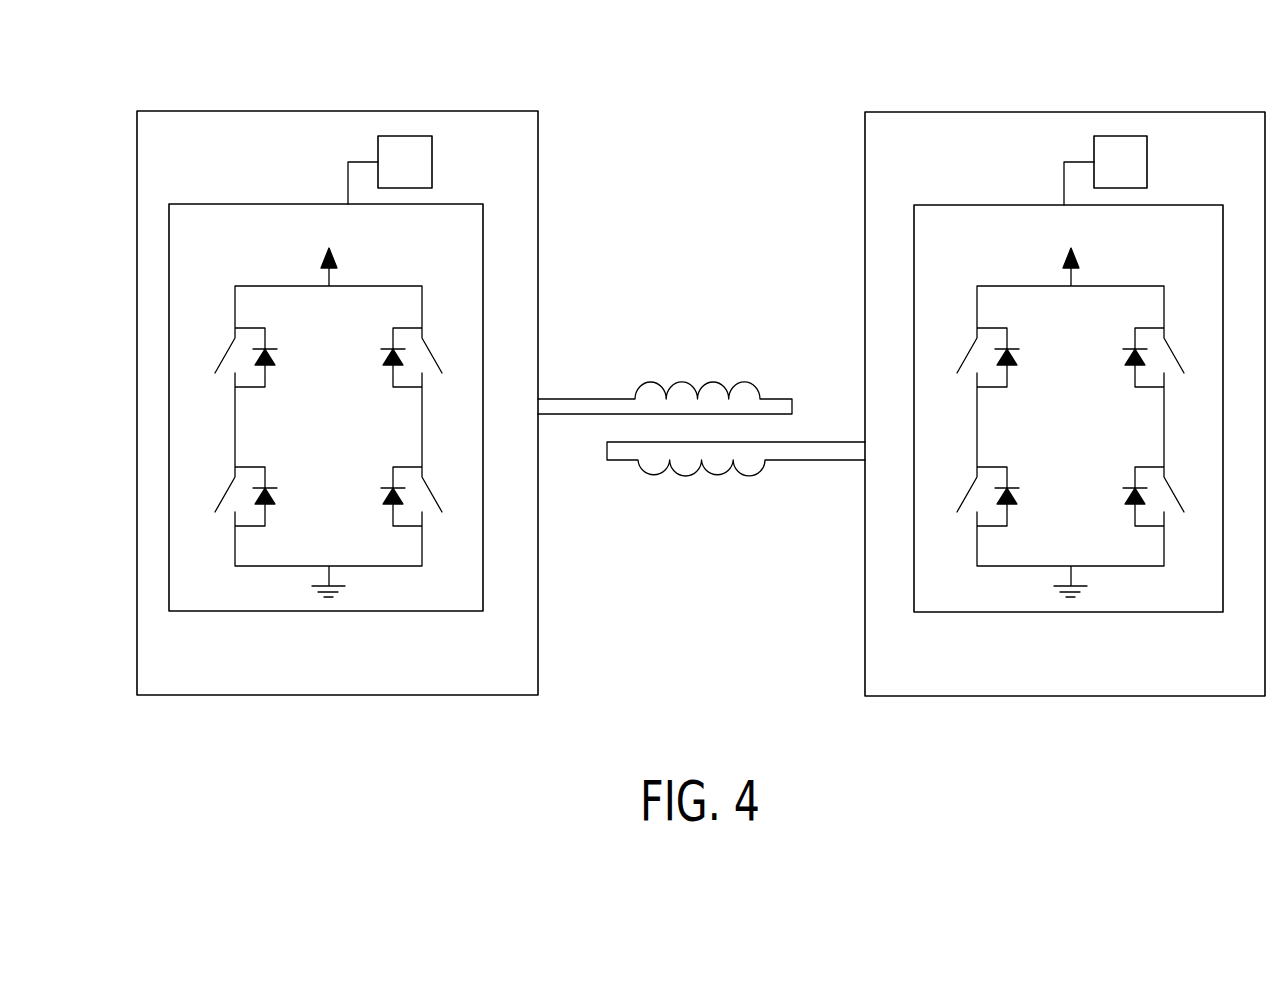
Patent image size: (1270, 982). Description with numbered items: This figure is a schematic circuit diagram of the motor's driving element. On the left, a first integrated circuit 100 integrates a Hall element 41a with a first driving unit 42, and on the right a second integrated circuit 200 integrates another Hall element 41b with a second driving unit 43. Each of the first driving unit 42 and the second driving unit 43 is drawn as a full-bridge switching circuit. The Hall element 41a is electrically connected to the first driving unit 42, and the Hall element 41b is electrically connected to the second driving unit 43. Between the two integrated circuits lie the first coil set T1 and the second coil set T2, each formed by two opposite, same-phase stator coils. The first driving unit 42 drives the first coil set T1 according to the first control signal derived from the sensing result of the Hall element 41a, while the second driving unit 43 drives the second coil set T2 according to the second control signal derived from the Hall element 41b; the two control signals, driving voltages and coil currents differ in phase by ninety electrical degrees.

The first integrated circuit 100 is at (266, 111).
The second integrated circuit 200 is at (884, 112).
The Hall element 41a is at (433, 160).
The Hall element 41b is at (1150, 158).
The first driving unit 42 is at (422, 613).
The second driving unit 43 is at (1163, 613).
The first coil set T1 is at (665, 367).
The second coil set T2 is at (736, 485).